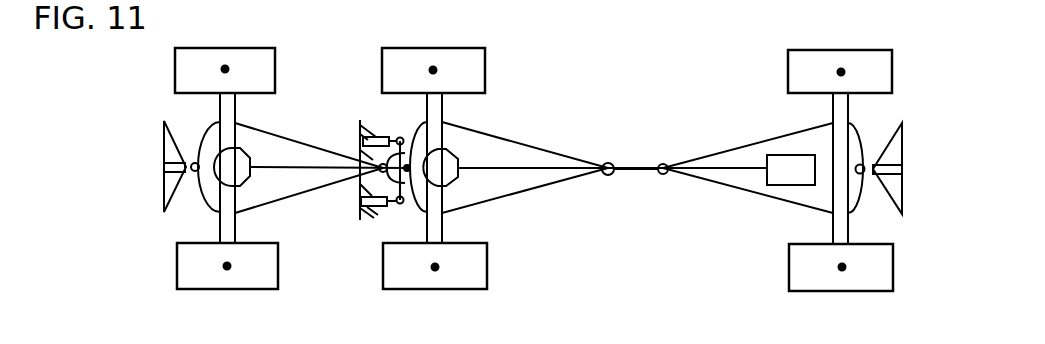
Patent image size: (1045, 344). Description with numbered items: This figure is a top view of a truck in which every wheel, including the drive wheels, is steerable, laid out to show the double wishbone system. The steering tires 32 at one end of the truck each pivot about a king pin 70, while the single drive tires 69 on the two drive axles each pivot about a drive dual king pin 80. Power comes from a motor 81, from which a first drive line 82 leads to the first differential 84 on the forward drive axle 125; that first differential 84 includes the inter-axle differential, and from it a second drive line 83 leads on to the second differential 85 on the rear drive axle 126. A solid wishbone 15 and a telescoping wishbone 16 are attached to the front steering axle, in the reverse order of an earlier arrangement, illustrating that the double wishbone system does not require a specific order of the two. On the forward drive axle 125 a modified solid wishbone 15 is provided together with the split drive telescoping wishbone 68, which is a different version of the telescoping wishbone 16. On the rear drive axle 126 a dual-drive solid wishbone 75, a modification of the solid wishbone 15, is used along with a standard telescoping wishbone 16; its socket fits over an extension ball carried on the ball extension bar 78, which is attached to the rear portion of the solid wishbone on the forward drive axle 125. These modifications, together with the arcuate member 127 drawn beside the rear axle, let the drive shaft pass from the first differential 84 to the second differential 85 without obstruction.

The solid wishbone 15 is at (538, 141).
The telescoping wishbone 16 is at (157, 148).
The steering tires 32 is at (788, 63).
The split drive telescoping wishbone 68 is at (358, 140).
The single drive tires 69 is at (277, 62).
The king pin 70 is at (842, 267).
The dual-drive solid wishbone 75 is at (302, 203).
The ball extension bar 78 is at (388, 202).
The drive dual king pin 80 is at (225, 69).
The motor 81 is at (791, 170).
The first drive line 82 is at (634, 164).
The second drive line 83 is at (295, 166).
The first differential 84 is at (455, 177).
The second differential 85 is at (243, 174).
The forward drive axle 125 is at (443, 221).
The rear drive axle 126 is at (220, 226).
The arcuate guide 127 is at (833, 227).